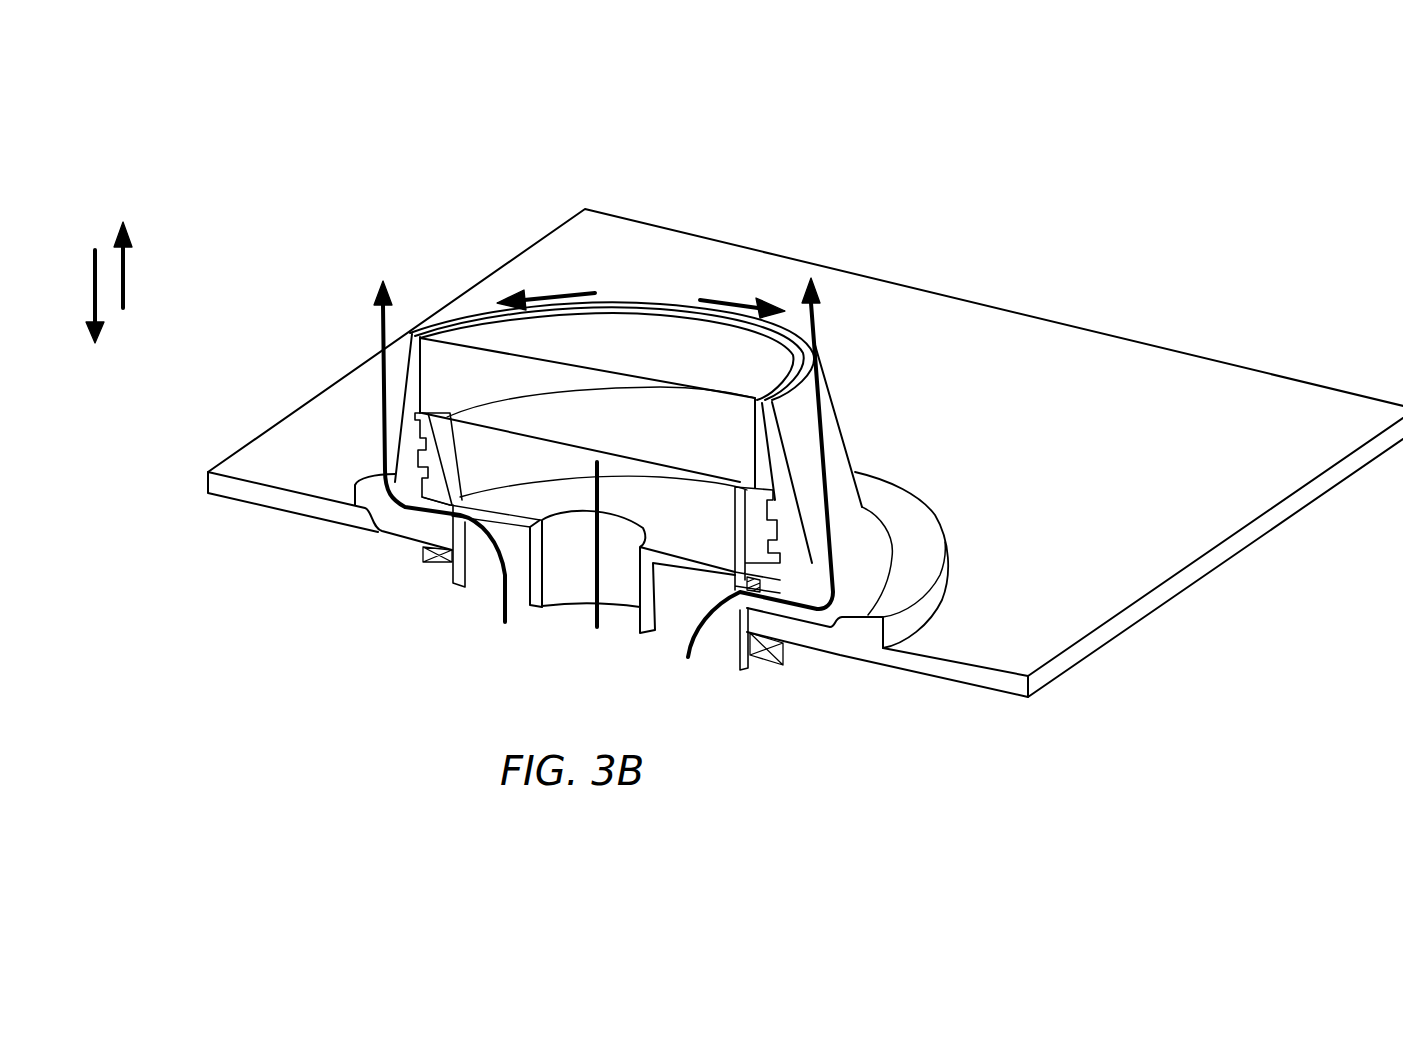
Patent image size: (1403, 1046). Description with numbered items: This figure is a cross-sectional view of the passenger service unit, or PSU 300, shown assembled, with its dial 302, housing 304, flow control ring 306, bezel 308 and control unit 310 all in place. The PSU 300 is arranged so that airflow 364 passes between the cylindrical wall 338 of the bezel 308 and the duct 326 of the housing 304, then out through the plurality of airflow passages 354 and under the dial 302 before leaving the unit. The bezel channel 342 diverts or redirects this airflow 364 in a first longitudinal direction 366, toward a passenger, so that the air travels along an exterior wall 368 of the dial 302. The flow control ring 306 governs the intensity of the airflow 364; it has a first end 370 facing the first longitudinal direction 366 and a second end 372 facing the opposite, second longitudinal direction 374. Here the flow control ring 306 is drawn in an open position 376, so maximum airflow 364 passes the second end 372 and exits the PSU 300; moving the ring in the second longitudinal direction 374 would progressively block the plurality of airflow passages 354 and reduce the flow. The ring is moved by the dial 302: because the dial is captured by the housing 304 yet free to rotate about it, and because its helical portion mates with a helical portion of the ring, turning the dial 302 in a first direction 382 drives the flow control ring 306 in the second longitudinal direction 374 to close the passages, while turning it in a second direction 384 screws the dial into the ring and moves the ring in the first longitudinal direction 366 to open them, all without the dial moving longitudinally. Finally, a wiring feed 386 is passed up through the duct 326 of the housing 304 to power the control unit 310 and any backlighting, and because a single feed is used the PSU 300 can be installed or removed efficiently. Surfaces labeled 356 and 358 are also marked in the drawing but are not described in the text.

The PSU 300 is at (613, 251).
The dial 302 is at (812, 405).
The housing 304 is at (578, 353).
The flow control ring 306 is at (437, 483).
The bezel 308 is at (320, 487).
The control unit 310 is at (650, 342).
The duct 326 is at (538, 605).
The cylindrical wall 338 is at (460, 590).
The bezel channel 342 is at (863, 578).
The plurality of airflow passages 354 is at (471, 530).
The seal 356 is at (425, 548).
The plate top surface 358 is at (1118, 447).
The airflow 364 is at (512, 612).
The first longitudinal direction 366 is at (127, 250).
The exterior wall 368 is at (843, 388).
The first end 370 is at (757, 495).
The second end 372 is at (752, 639).
The second longitudinal direction 374 is at (103, 316).
The open position 376 is at (758, 619).
The first direction 382 is at (733, 297).
The second direction 384 is at (557, 293).
The wiring feed 386 is at (600, 612).